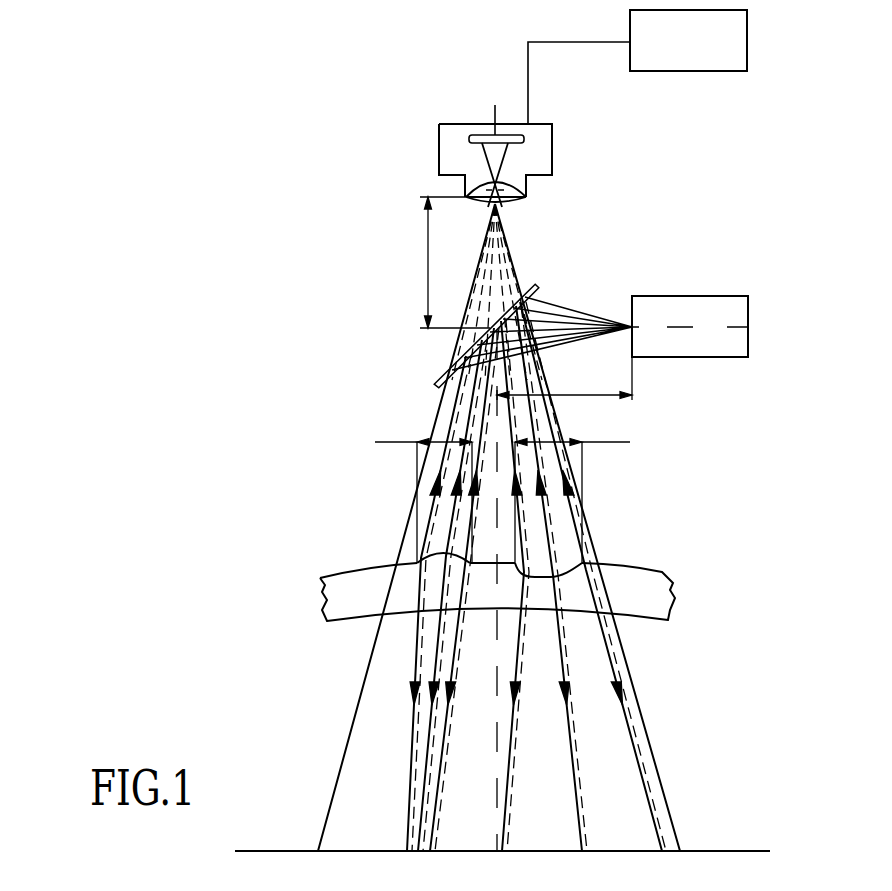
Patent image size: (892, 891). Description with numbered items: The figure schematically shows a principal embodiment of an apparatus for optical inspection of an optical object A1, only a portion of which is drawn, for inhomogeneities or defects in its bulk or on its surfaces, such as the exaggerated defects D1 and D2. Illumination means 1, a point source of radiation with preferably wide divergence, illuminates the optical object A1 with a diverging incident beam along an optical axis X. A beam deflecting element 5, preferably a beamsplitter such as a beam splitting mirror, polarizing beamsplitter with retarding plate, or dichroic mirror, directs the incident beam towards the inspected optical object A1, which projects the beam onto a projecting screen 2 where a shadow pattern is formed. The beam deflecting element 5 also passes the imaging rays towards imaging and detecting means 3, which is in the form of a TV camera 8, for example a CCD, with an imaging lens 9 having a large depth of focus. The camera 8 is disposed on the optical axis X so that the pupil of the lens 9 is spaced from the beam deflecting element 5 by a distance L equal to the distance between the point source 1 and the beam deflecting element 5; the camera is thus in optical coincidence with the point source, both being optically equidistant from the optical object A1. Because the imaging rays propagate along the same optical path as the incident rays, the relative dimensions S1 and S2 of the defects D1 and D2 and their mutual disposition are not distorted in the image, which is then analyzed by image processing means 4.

The illumination means 1 is at (707, 296).
The projecting screen 2 is at (735, 851).
The imaging and detecting means 3 is at (386, 164).
The image processing means 4 is at (695, 57).
The beam deflecting element 5 is at (536, 287).
The TV camera 8 is at (545, 149).
The imaging lens 9 is at (527, 196).
The optical object A1 is at (653, 593).
The defect D1 is at (433, 556).
The defect D2 is at (545, 570).
The optical axis X is at (499, 722).
The relative dimension of defect D1 S1 is at (414, 488).
The relative dimension of defect D2 S2 is at (586, 488).
The distance L is at (518, 298).